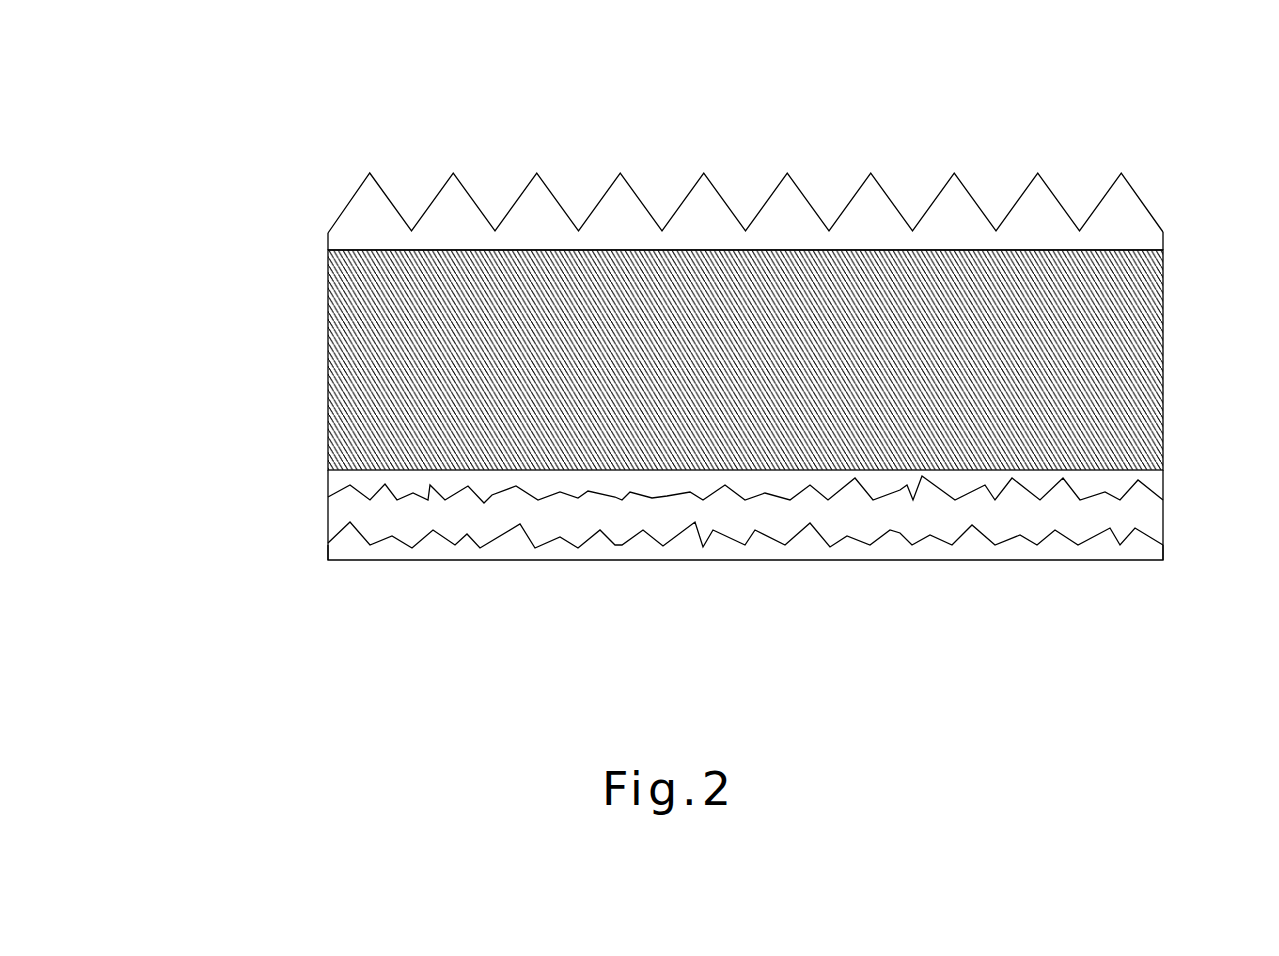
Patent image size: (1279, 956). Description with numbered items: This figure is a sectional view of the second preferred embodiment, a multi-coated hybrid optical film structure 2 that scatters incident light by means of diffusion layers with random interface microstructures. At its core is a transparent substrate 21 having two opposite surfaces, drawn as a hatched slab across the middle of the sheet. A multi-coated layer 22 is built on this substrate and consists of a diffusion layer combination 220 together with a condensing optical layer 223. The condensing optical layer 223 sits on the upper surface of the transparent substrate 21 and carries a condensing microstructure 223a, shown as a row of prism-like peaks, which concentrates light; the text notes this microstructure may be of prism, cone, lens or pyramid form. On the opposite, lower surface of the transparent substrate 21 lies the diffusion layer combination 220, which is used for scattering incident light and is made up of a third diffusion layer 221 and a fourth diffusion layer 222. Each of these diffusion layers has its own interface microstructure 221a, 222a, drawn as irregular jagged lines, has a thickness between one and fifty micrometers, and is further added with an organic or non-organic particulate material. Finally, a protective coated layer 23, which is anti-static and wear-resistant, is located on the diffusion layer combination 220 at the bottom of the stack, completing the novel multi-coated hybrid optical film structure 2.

The multi-coated hybrid optical film structure 2 is at (315, 167).
The transparent substrate 21 is at (1122, 327).
The multi-coated layer 22 is at (160, 217).
The protective coated layer 23 is at (1060, 550).
The diffusion layer combination 220 is at (240, 450).
The third diffusion layer 221 is at (353, 480).
The interface microstructure 221a is at (1150, 483).
The fourth diffusion layer 222 is at (353, 515).
The interface microstructure 222a is at (1143, 530).
The condensing optical layer 223 is at (350, 233).
The condensing microstructure 223a is at (1100, 198).